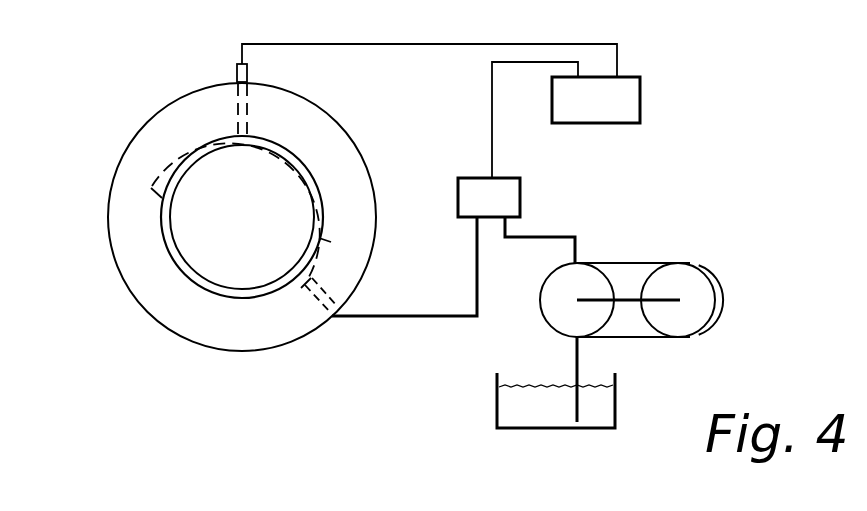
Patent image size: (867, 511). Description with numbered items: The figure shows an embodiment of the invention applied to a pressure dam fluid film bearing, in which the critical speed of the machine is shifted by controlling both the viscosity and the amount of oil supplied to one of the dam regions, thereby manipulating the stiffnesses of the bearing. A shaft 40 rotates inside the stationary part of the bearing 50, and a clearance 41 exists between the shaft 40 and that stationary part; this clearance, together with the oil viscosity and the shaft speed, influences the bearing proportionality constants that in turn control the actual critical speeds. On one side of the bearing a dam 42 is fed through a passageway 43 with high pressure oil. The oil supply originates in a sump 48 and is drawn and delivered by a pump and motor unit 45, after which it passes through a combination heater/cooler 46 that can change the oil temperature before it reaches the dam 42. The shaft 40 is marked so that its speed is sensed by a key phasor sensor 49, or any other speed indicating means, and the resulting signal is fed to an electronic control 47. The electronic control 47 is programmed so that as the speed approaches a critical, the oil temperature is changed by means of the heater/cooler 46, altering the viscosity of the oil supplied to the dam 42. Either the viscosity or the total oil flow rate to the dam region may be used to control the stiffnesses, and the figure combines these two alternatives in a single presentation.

The shaft 40 is at (259, 214).
The clearance 41 is at (212, 289).
The dam 42 is at (326, 253).
The passageway 43 is at (333, 316).
The pump and motor unit 45 is at (690, 247).
The heater/cooler 46 is at (510, 201).
The electronic control 47 is at (630, 101).
The sump 48 is at (603, 407).
The key phasor sensor 49 is at (236, 73).
The stationary part of the bearing 50 is at (273, 338).